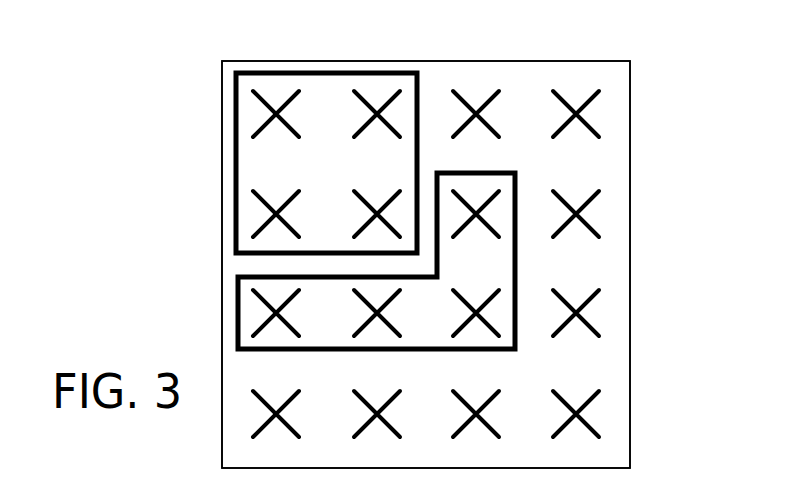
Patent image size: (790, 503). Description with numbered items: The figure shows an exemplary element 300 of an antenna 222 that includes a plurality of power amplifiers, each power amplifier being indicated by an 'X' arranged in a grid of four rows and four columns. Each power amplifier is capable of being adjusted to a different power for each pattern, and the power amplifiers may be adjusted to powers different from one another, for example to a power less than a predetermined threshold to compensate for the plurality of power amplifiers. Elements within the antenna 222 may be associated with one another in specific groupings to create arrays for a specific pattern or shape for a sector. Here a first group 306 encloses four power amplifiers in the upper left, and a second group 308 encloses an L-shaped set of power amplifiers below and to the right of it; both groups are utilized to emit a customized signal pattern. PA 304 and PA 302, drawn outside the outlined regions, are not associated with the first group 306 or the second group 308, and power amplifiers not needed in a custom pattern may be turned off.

The memory array configuration 300 is at (118, 92).
The antenna 222 is at (258, 60).
The first group 306 is at (236, 166).
The second group 308 is at (238, 302).
The PA 304 is at (588, 306).
The PA 302 is at (588, 406).